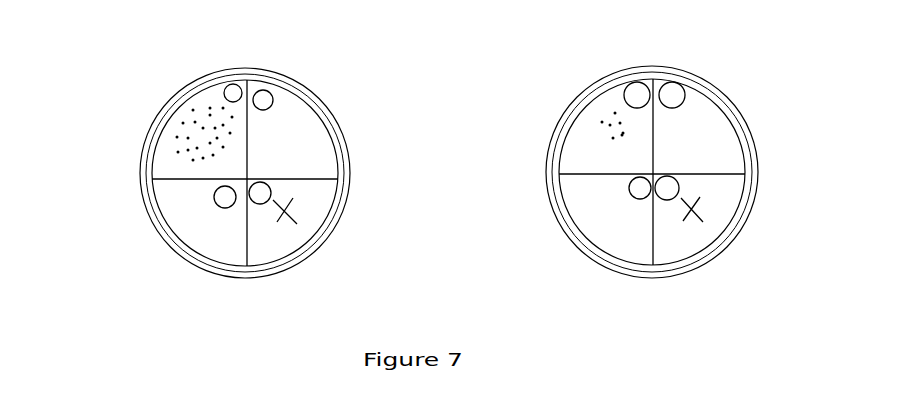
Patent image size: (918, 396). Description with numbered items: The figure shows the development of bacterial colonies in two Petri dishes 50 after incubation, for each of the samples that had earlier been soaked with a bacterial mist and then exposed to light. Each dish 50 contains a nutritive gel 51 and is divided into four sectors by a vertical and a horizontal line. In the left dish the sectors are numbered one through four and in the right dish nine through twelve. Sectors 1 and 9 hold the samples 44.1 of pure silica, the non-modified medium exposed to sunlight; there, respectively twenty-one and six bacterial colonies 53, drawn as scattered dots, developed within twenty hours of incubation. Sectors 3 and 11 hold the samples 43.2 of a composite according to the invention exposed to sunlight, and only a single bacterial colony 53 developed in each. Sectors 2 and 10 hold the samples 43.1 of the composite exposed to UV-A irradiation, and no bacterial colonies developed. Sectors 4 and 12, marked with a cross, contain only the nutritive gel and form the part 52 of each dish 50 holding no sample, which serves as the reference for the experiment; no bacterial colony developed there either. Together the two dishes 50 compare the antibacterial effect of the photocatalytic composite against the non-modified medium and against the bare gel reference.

The Petri dish 50 is at (419, 193).
The photocatalytic composite sample exposed to UV-A irradiation 43.1 is at (285, 103).
The photocatalytic composite sample exposed to sunlight 43.2 is at (197, 247).
The non-modified medium sample 44.1 is at (170, 147).
The bacterial colony 53 is at (167, 158).
The reference part of the dish 52 is at (261, 245).
The nutritive gel 51 is at (320, 207).
The sector containing non-modified medium sample 1 is at (233, 93).
The sector containing UV-A exposed composite sample 2 is at (263, 100).
The sector containing sunlight exposed composite sample 3 is at (225, 197).
The reference sector 4 is at (260, 193).
The sector containing non-modified medium sample 9 is at (637, 95).
The sector containing UV-A exposed composite sample 10 is at (672, 95).
The sector containing sunlight exposed composite sample 11 is at (640, 188).
The reference sector 12 is at (667, 188).